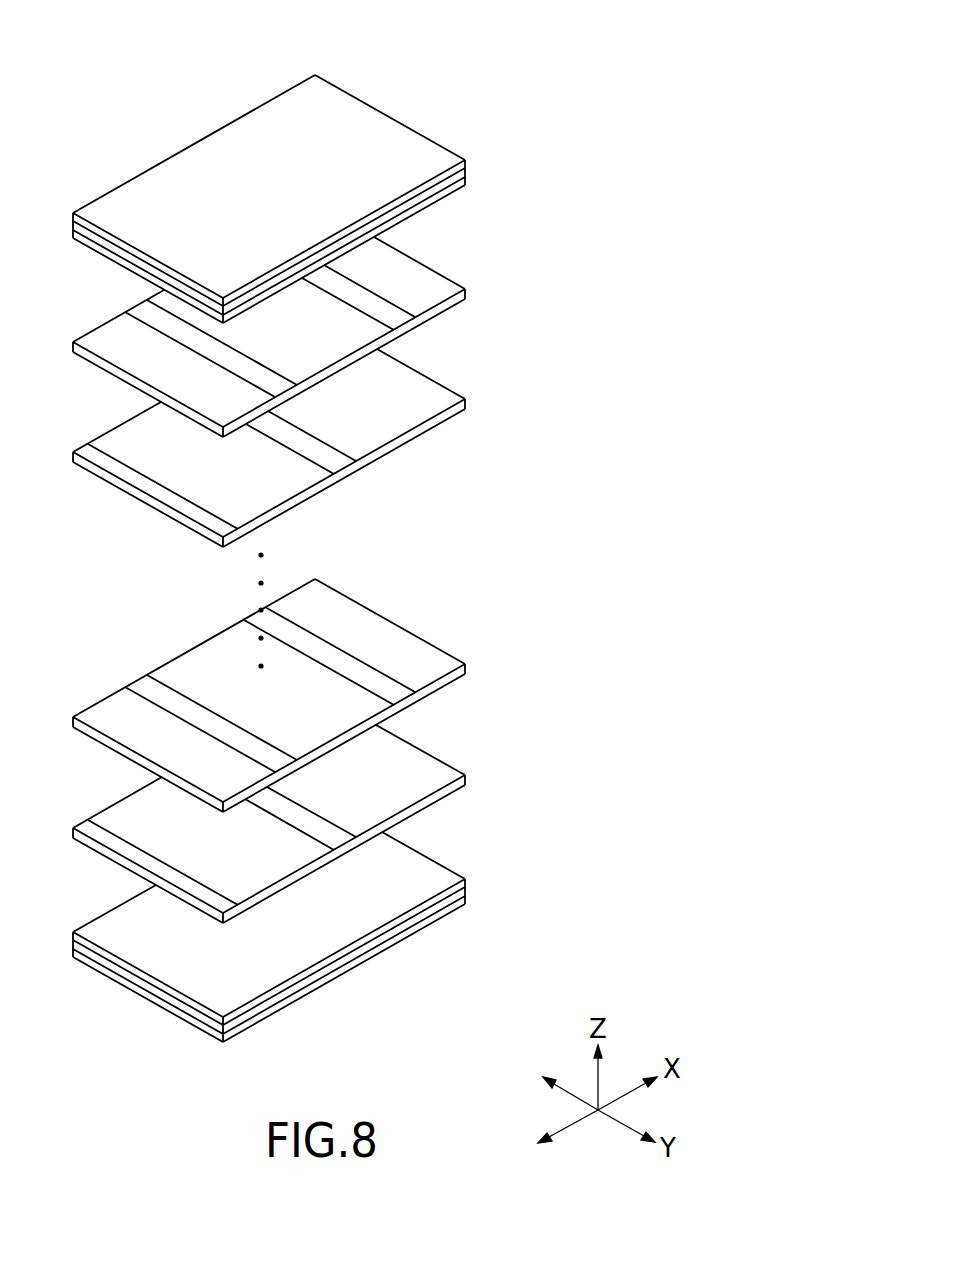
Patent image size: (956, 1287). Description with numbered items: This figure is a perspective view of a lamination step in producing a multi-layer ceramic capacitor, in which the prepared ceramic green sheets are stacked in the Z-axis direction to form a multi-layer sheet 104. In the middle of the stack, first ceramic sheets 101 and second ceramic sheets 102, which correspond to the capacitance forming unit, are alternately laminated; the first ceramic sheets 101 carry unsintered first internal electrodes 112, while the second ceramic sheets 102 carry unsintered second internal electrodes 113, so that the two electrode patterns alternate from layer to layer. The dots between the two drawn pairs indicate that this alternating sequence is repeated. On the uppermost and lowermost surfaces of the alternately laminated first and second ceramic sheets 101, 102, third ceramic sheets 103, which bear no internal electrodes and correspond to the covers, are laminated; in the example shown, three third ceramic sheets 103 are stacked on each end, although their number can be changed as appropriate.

The multi-layer sheet 104 is at (418, 88).
The third ceramic sheet 103 is at (474, 168).
The first ceramic sheet 101 is at (475, 282).
The second ceramic sheet 102 is at (475, 393).
The unsintered first internal electrode 112 is at (102, 337).
The unsintered second internal electrode 113 is at (102, 447).